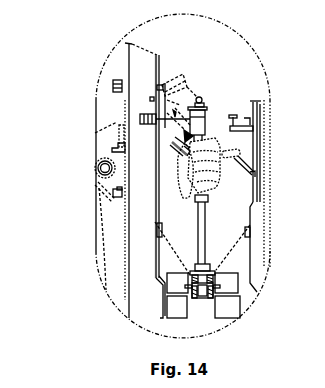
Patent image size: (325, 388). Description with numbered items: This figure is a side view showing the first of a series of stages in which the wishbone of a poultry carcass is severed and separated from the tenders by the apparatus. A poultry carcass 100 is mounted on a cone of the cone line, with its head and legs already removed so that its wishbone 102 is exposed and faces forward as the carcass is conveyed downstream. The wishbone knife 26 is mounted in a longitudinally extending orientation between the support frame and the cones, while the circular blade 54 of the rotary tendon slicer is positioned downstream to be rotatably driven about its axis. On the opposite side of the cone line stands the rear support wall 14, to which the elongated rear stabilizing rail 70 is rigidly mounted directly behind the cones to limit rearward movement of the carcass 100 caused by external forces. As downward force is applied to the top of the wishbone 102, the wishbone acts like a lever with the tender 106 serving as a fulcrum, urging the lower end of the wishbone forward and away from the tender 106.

The rear support wall 14 is at (259, 130).
The wishbone knife 26 is at (188, 158).
The circular blade 54 is at (185, 145).
The rear stabilizing rail 70 is at (233, 153).
The poultry carcass 100 is at (208, 168).
The wishbone 102 is at (187, 151).
The tender 106 is at (182, 183).